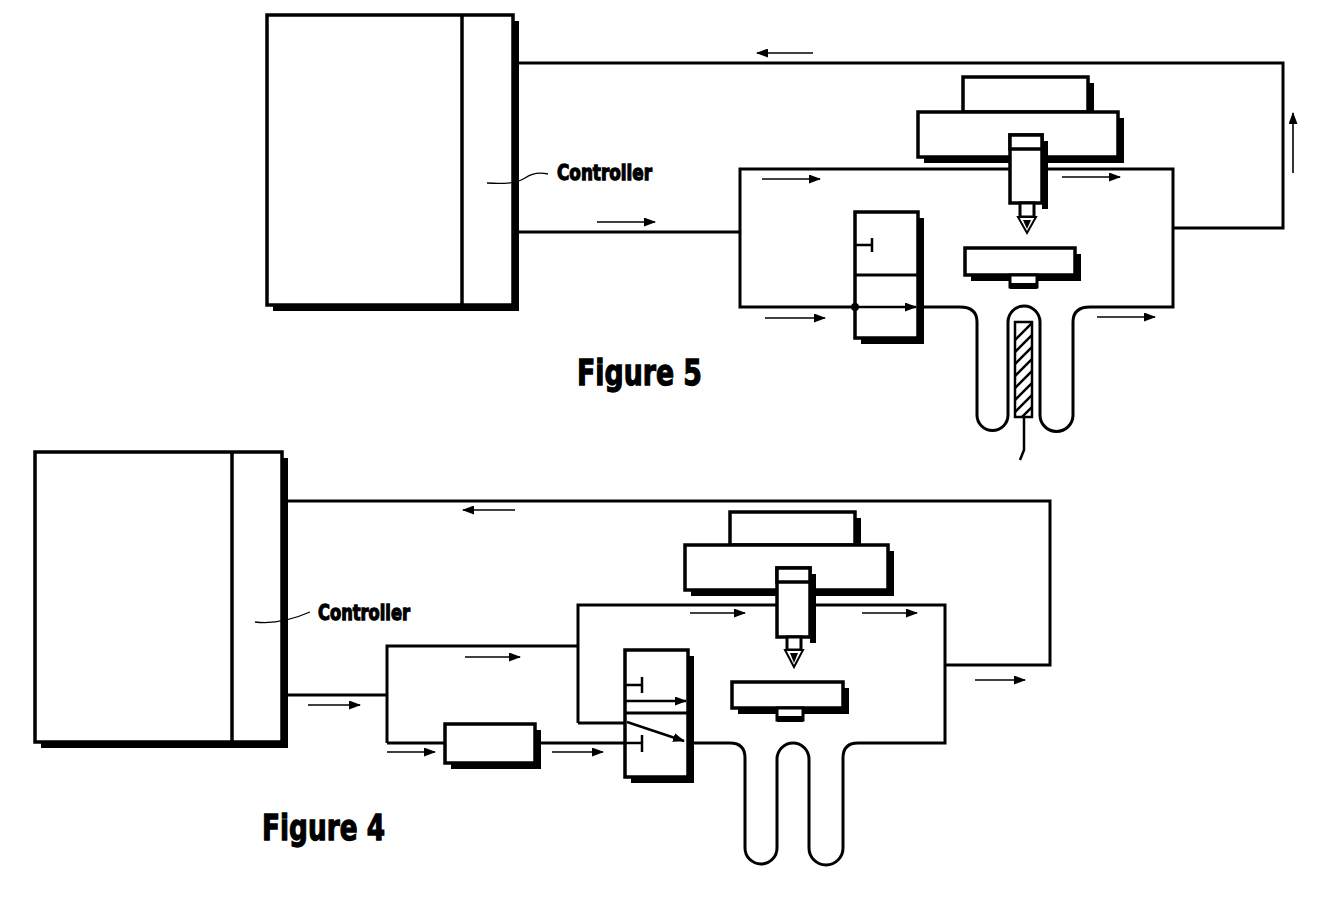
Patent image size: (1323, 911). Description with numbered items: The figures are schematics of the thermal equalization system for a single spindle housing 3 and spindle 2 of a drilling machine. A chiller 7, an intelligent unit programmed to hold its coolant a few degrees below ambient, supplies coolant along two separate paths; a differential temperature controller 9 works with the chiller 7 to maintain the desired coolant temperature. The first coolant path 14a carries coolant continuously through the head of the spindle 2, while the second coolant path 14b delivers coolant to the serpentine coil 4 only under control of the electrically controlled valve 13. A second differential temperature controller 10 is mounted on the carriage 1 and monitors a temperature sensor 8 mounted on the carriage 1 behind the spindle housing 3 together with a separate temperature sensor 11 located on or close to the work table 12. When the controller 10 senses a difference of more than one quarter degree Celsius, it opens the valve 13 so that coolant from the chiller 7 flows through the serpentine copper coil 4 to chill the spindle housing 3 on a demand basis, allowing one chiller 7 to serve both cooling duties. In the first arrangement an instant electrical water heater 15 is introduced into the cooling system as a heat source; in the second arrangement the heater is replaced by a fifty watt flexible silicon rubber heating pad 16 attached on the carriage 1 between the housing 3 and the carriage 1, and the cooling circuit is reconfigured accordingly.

In FIG. 5, the carriage 1 is at (1125, 126).
In FIG. 4, the carriage 1 is at (882, 560).
In FIG. 5, the spindle 2 is at (1036, 224).
In FIG. 4, the spindle 2 is at (803, 657).
In FIG. 5, the spindle housing 3 is at (1048, 197).
In FIG. 4, the spindle housing 3 is at (815, 632).
In FIG. 4, the serpentine coil 4 is at (742, 852).
In FIG. 5, the chiller 7 is at (278, 52).
In FIG. 4, the chiller 7 is at (132, 463).
In FIG. 5, the temperature sensor 8 is at (1013, 144).
In FIG. 4, the temperature sensor 8 is at (776, 578).
In FIG. 4, the differential temperature controller 9 is at (258, 583).
In FIG. 5, the differential temperature controller 10 is at (1038, 77).
In FIG. 4, the differential temperature controller 10 is at (797, 511).
In FIG. 5, the temperature sensor 11 is at (1038, 285).
In FIG. 4, the temperature sensor 11 is at (808, 718).
In FIG. 5, the work table 12 is at (1082, 260).
In FIG. 4, the work table 12 is at (852, 692).
In FIG. 5, the electrically controlled valve 13 is at (922, 288).
In FIG. 4, the electrically controlled valve 13 is at (618, 768).
In FIG. 5, the coolant path 14a is at (757, 168).
In FIG. 4, the coolant path 14a is at (623, 604).
In FIG. 5, the coolant path 14b is at (765, 307).
In FIG. 4, the coolant path 14b is at (603, 719).
In FIG. 4, the instant electrical water heater 15 is at (475, 770).
In FIG. 5, the flexible silicon rubber heating pad 16 is at (1033, 388).